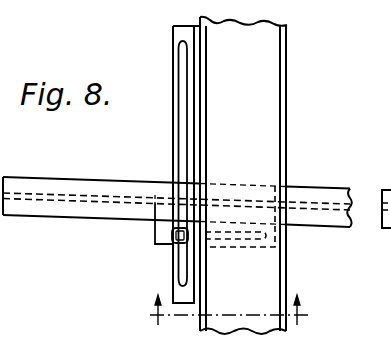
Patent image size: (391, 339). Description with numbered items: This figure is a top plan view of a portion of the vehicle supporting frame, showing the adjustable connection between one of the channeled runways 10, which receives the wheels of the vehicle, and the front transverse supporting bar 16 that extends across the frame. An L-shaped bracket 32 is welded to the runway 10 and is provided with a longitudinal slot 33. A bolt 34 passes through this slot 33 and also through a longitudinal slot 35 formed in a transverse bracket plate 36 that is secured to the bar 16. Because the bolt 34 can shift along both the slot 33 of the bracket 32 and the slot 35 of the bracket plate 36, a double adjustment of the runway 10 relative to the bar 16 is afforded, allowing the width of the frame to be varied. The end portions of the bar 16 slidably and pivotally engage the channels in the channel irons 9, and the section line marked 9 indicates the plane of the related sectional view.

The channeled runway 10 is at (266, 130).
The second supporting bar 16 is at (328, 190).
The L-shaped bracket 32 is at (173, 125).
The longitudinal slot 33 is at (179, 147).
The bolt 34 is at (176, 245).
The longitudinal slot 35 is at (238, 250).
The transverse bracket plate 36 is at (263, 252).
The channel iron 9 is at (228, 310).